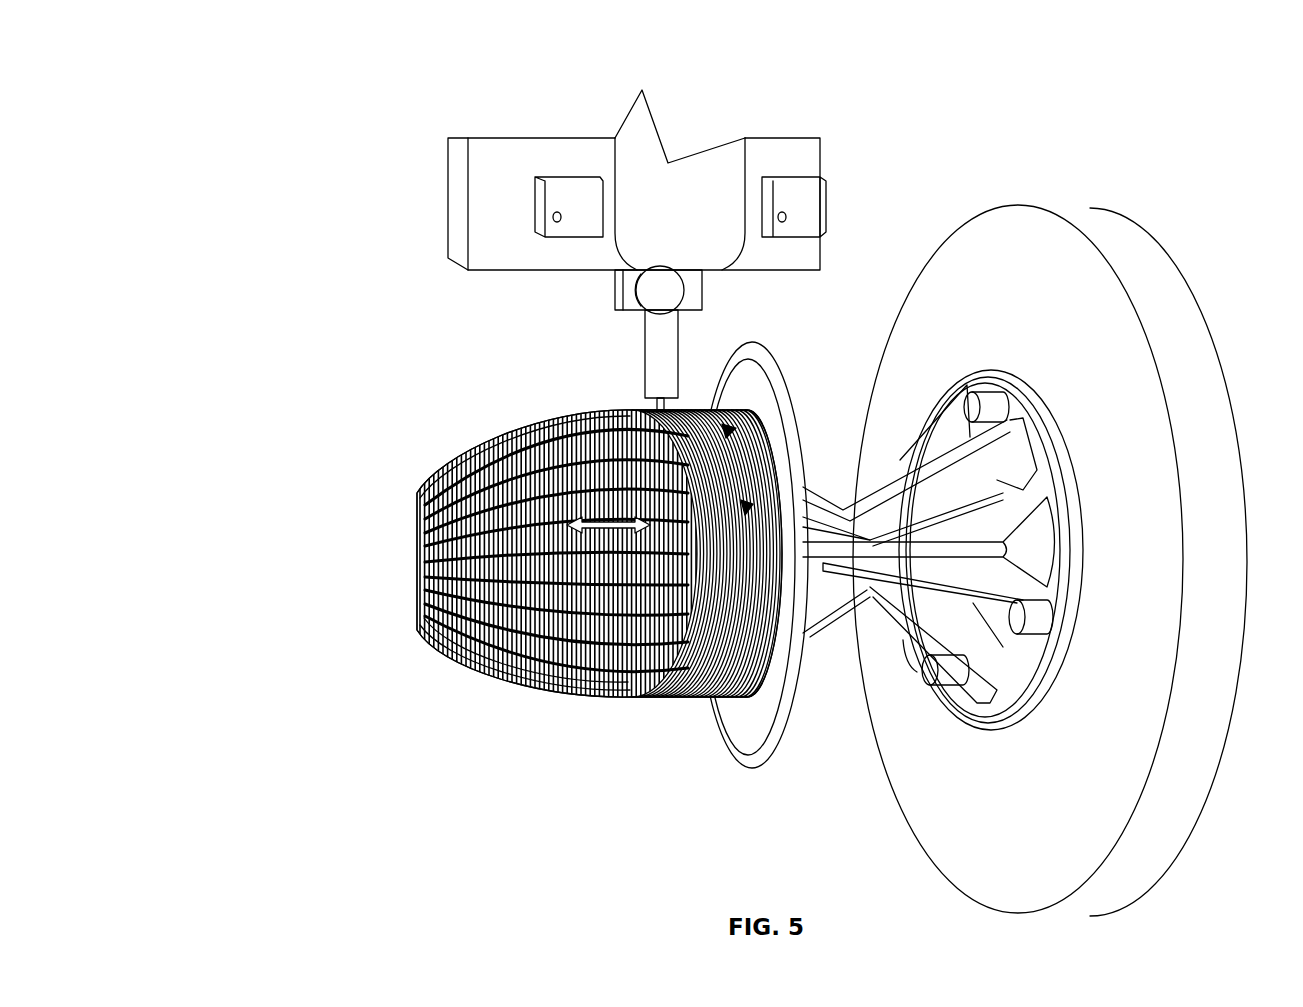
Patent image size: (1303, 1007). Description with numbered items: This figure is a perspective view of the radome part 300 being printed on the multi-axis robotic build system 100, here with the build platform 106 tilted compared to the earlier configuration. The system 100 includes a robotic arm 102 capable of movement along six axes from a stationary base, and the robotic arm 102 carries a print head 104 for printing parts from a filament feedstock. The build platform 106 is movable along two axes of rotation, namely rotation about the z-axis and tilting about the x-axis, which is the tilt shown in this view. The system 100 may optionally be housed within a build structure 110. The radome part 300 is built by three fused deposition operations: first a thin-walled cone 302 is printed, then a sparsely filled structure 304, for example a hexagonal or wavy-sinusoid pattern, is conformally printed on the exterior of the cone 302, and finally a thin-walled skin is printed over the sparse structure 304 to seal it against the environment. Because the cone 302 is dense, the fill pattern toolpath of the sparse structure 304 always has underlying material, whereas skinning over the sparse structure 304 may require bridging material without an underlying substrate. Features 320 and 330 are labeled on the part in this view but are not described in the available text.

The multi-axis robotic build system 100 is at (381, 73).
The robotic arm 102 is at (490, 163).
The print head 104 is at (680, 335).
The build platform 106 is at (1093, 294).
The build structure 110 is at (1060, 662).
The radome part 300 is at (433, 636).
The thin-walled cone 302 is at (648, 695).
The sparsely filled structure 304 is at (532, 440).
The front rim 320 is at (522, 680).
The flange ring 330 is at (747, 461).